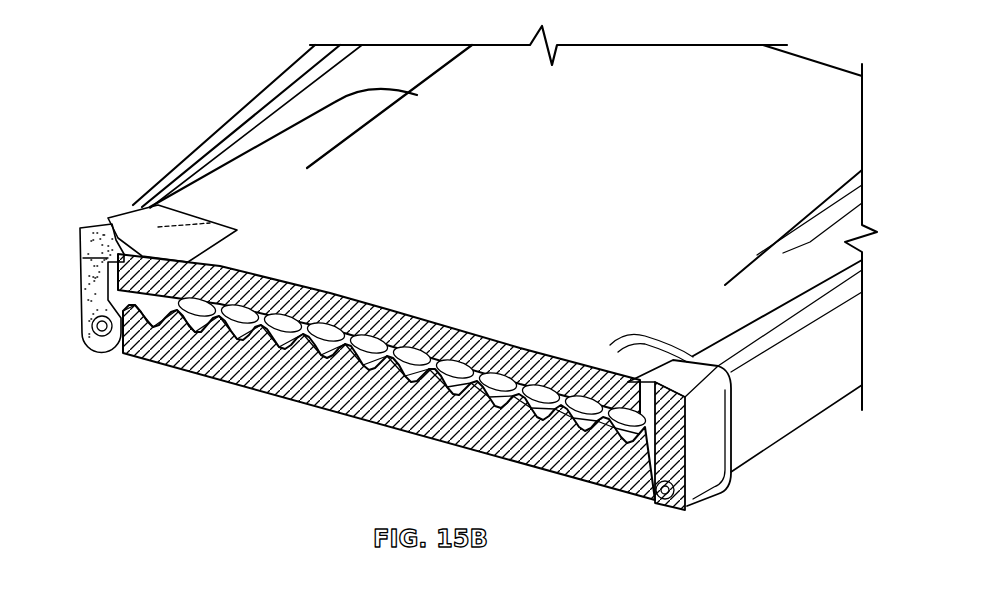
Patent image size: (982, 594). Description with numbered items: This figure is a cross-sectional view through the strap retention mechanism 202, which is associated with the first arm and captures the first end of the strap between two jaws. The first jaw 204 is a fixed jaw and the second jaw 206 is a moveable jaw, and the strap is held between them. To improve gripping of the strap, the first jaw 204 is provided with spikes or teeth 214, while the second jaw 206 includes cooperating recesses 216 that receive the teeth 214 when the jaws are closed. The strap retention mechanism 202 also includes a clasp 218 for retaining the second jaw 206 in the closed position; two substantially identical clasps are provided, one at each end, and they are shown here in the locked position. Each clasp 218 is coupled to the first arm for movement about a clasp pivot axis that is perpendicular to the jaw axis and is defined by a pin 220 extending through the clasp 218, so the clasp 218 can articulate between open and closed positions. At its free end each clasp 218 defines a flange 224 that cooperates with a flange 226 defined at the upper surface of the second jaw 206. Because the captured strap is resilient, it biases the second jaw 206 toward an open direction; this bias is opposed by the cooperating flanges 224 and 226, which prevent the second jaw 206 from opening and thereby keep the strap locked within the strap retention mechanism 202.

The strap retention mechanism 202 is at (386, 404).
The first jaw 204 is at (612, 487).
The second jaw 206 is at (286, 156).
The teeth 214 is at (330, 363).
The recesses 216 is at (283, 338).
The clasp 218 is at (115, 210).
The pin 220 is at (92, 348).
The flange 224 is at (136, 226).
The flange 226 is at (81, 229).